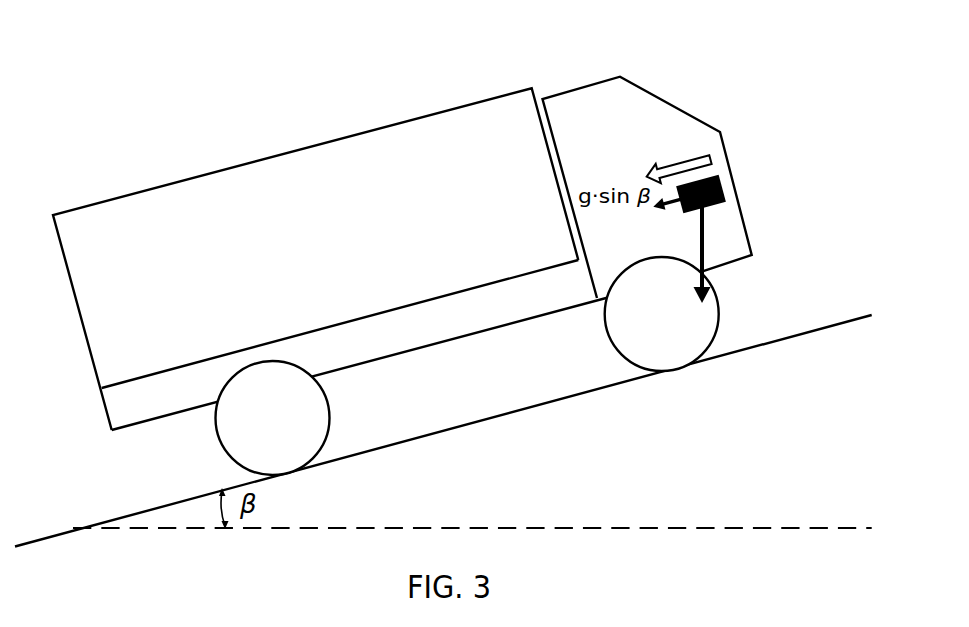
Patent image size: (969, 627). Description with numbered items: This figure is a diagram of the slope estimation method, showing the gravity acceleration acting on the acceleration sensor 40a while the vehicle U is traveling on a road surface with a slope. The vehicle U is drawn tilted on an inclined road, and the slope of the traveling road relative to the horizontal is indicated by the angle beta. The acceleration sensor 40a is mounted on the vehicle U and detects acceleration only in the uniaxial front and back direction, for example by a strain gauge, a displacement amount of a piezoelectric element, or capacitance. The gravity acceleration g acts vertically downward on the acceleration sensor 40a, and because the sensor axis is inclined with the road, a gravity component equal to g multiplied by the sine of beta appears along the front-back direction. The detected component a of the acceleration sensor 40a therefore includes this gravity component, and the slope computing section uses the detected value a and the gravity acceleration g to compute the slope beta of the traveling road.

The vehicle U is at (279, 70).
The acceleration sensor 40a is at (725, 186).
The detected component of acceleration sensor a is at (678, 161).
The gravity acceleration g is at (710, 255).